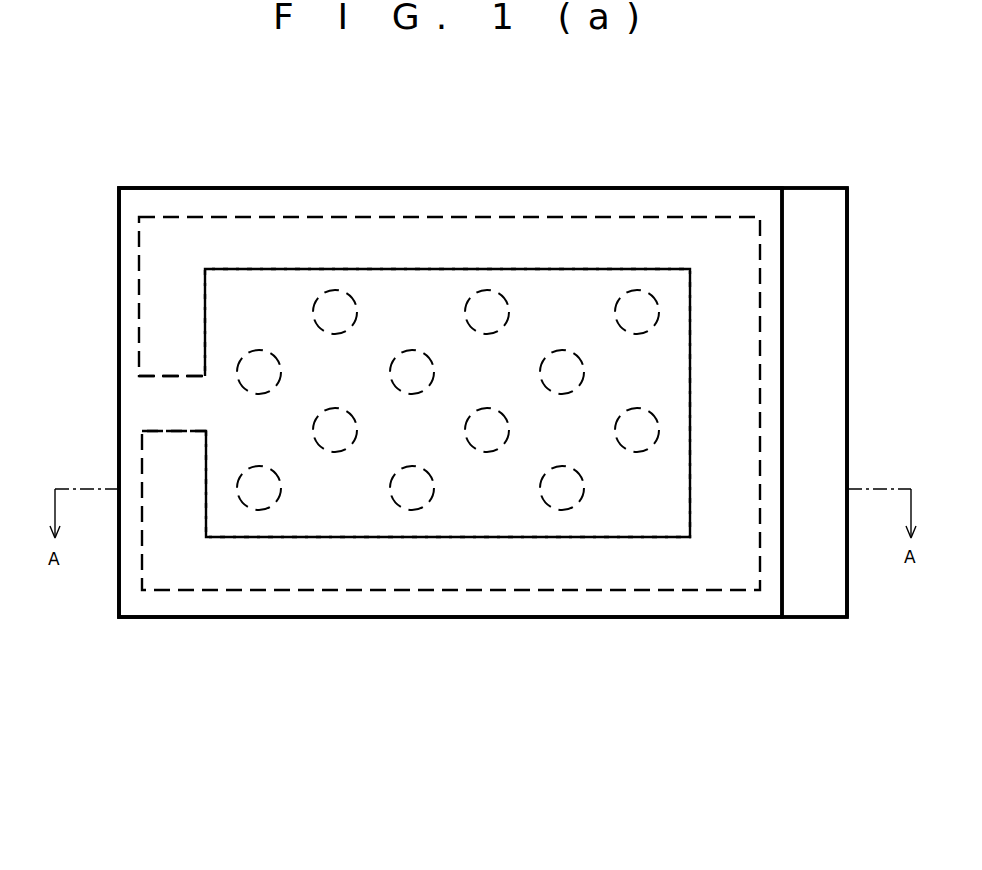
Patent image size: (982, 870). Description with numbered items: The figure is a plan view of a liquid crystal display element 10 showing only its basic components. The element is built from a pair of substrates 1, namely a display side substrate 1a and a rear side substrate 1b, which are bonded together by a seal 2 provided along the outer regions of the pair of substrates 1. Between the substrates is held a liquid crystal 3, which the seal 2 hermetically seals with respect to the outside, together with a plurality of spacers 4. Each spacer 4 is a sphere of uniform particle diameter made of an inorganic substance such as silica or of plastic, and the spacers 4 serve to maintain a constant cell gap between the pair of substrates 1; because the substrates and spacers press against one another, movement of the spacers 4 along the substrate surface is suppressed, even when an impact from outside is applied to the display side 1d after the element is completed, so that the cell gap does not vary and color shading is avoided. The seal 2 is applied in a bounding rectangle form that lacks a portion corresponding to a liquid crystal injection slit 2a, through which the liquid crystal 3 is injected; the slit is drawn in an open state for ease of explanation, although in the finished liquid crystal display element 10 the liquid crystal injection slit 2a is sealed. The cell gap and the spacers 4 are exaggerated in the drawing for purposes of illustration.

The liquid crystal display element 10 is at (779, 151).
The pair of substrates 1 is at (835, 679).
The display side substrate 1a is at (746, 604).
The rear side substrate 1b is at (810, 604).
The display side 1d is at (460, 358).
The seal 2 is at (175, 572).
The liquid crystal injection slit 2a is at (151, 403).
The liquid crystal 3 is at (322, 528).
The spacers 4 is at (563, 500).